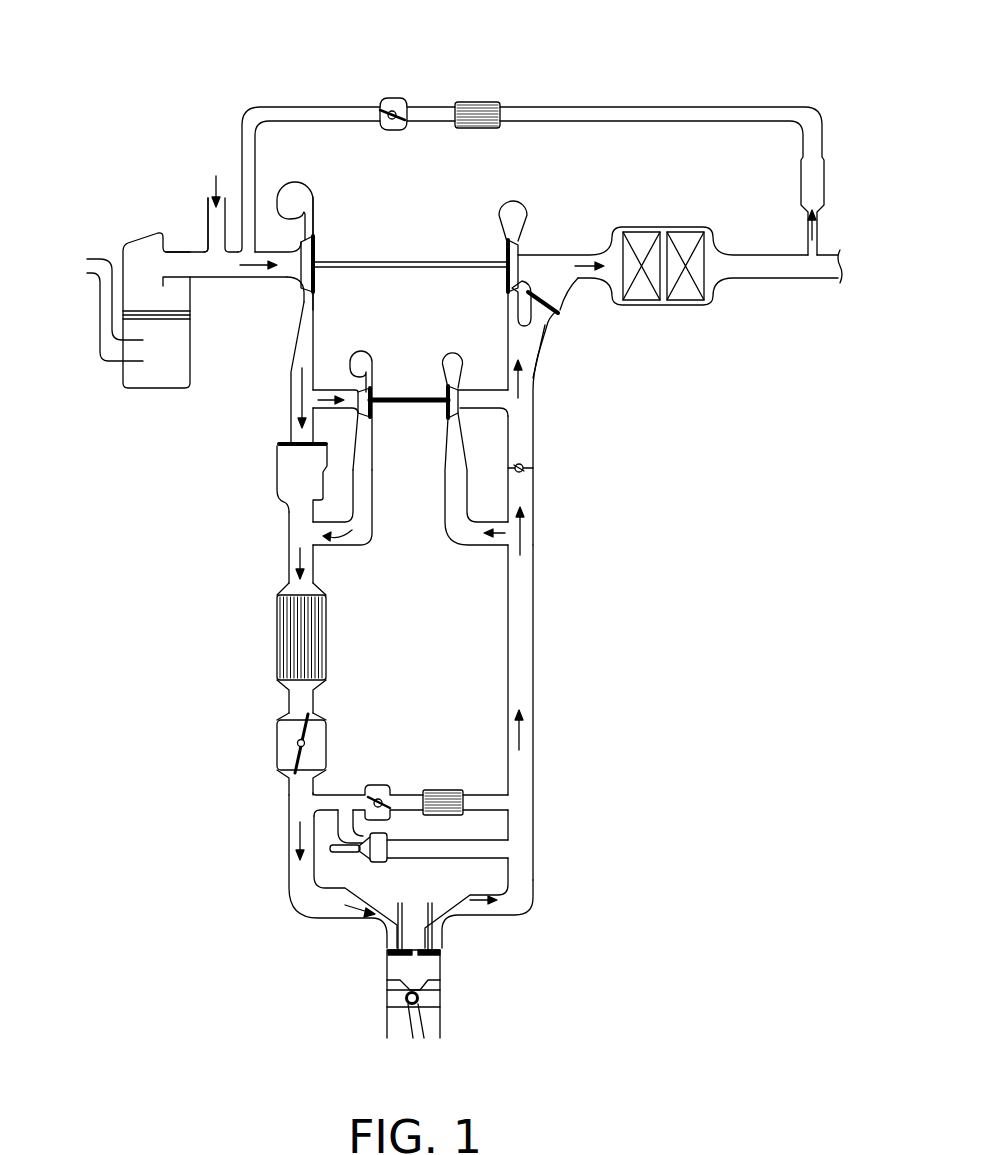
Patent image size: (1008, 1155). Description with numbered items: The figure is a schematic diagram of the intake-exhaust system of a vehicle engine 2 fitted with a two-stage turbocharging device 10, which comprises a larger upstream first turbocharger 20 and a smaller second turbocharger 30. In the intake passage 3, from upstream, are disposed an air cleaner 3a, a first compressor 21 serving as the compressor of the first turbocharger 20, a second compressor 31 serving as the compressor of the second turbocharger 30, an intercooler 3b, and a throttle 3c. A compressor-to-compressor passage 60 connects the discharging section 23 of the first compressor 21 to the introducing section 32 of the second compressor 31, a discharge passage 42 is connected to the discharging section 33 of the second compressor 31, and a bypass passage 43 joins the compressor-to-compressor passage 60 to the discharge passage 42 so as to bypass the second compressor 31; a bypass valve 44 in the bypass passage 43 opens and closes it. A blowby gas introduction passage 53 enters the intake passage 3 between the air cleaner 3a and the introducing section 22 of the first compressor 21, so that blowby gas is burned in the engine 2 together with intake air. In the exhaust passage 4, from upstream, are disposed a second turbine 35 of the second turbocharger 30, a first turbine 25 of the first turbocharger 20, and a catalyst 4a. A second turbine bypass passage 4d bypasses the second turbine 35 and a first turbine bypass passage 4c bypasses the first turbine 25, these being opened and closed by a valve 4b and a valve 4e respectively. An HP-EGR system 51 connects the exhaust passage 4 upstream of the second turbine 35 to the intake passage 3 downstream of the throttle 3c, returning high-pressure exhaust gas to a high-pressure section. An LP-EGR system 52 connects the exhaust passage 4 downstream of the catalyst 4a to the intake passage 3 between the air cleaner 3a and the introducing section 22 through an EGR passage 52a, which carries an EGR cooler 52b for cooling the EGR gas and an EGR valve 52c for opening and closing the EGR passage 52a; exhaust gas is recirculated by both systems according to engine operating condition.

The engine 2 is at (403, 967).
The intake passage 3 is at (303, 887).
The air cleaner 3a is at (137, 248).
The intercooler 3b is at (297, 635).
The throttle 3c is at (290, 745).
The exhaust passage 4 is at (527, 688).
The catalyst 4a is at (660, 307).
The valve 4b is at (532, 468).
The first turbine bypass passage 4c is at (536, 328).
The second turbine bypass passage 4d is at (520, 422).
The valve 4e is at (556, 300).
The turbocharging device 10 is at (205, 415).
The first turbocharger 20 is at (420, 238).
The first compressor 21 is at (318, 249).
The introducing section 22 is at (264, 250).
The discharging section 23 is at (318, 298).
The first turbine 25 is at (522, 244).
The second turbocharger 30 is at (410, 426).
The second compressor 31 is at (370, 404).
The introducing section 32 is at (350, 388).
The discharging section 33 is at (372, 435).
The second turbine 35 is at (460, 385).
The discharge passage 42 is at (370, 523).
The bypass passage 43 is at (298, 512).
The bypass valve 44 is at (303, 452).
The HP-EGR system 51 is at (420, 758).
The LP-EGR system 52 is at (531, 131).
The EGR passage 52a is at (723, 107).
The EGR cooler 52b is at (478, 100).
The EGR valve 52c is at (388, 97).
The blowby gas introduction passage 53 is at (215, 212).
The compressor-to-compressor passage 60 is at (305, 327).